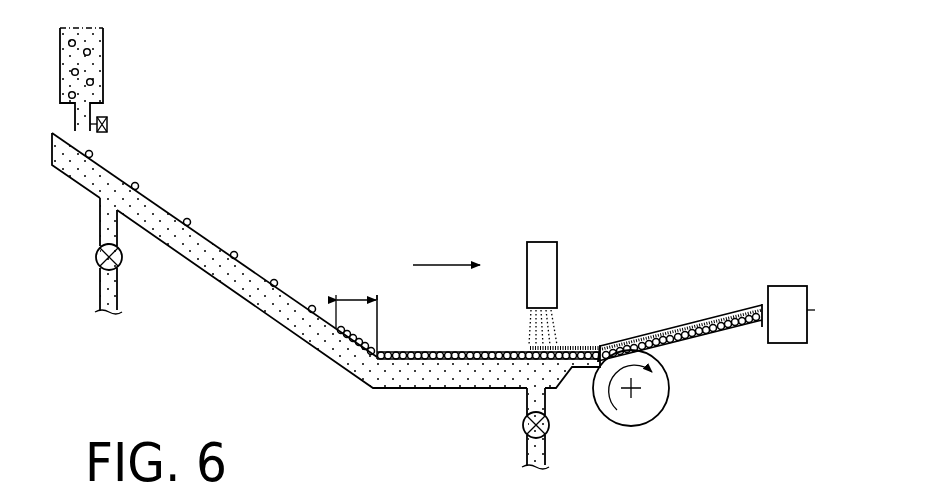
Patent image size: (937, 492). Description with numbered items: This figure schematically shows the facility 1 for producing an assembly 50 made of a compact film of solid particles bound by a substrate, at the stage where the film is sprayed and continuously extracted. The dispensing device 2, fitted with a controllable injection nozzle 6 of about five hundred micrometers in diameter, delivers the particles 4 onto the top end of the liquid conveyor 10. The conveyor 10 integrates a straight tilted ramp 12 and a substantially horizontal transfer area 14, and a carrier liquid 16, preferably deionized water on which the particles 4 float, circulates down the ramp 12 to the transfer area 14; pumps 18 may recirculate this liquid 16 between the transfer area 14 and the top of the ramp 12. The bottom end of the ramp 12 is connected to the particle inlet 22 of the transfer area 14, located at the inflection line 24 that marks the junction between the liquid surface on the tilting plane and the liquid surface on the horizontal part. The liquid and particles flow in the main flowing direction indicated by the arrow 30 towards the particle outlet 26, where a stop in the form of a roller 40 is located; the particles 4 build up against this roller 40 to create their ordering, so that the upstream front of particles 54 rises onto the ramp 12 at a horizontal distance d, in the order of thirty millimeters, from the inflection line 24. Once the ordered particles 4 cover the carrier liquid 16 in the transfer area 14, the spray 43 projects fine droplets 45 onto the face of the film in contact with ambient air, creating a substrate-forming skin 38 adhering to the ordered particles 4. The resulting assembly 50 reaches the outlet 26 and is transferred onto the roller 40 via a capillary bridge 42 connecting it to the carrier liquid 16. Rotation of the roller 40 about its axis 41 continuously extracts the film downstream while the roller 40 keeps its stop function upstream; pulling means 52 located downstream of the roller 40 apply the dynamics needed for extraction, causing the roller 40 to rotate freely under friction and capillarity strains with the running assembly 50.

The facility 1 is at (247, 193).
The dispensing device 2 is at (113, 76).
The particles 4 is at (90, 52).
The controllable injection nozzle 6 is at (107, 118).
The liquid conveyor 10 is at (355, 407).
The tilted ramp 12 is at (237, 297).
The transfer area 14 is at (493, 392).
The carrier liquid 16 is at (277, 320).
The pumps 18 is at (122, 262).
The particle inlet 22 is at (355, 378).
The inflection line 24 is at (374, 365).
The particle outlet 26 is at (598, 350).
The main flowing direction arrow 30 is at (440, 262).
The substrate-forming skin 38 is at (558, 350).
The roller 40 is at (617, 424).
The axis of the roller 41 is at (640, 398).
The capillary bridge 42 is at (607, 343).
The spray 43 is at (535, 242).
The fine droplets 45 is at (527, 335).
The assembly 50 is at (713, 313).
The pulling means 52 is at (778, 287).
The upstream front of particles 54 is at (338, 327).
The horizontal distance d is at (356, 301).